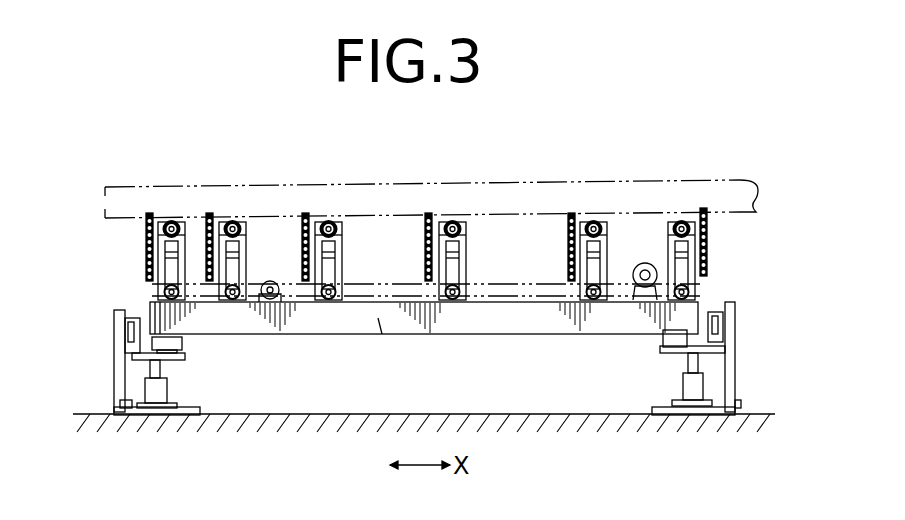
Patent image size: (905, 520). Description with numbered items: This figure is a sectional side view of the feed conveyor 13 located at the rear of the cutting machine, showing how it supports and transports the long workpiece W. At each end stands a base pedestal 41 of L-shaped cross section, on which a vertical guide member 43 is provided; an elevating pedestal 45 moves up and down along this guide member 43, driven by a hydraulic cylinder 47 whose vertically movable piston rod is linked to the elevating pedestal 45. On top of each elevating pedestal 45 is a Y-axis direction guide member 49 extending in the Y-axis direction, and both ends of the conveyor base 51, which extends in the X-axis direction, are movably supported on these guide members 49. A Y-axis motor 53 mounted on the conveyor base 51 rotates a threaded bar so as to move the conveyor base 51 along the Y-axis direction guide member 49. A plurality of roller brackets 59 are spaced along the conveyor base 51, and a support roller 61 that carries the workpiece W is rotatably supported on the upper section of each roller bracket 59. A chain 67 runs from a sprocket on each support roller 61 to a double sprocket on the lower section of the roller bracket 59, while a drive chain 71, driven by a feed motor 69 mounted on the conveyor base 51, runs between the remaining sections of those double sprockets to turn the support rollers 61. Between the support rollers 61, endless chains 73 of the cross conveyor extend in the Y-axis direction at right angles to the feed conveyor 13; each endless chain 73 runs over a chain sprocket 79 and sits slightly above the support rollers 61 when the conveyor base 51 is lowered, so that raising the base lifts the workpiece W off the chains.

The feed conveyor 13 is at (512, 178).
The workpiece W is at (740, 212).
The base pedestal 41 is at (114, 357).
The guide member 43 is at (132, 318).
The elevating pedestal 45 is at (183, 362).
The hydraulic cylinder 47 is at (135, 408).
The Y-axis direction guide member 49 is at (183, 345).
The conveyor base 51 is at (320, 334).
The Y-axis motor 53 is at (645, 263).
The roller bracket 59 is at (250, 240).
The support roller 61 is at (171, 229).
The chain 67 is at (352, 250).
The feed motor 69 is at (270, 281).
The drive chain 71 is at (382, 334).
The endless chain 73 is at (149, 213).
The chain sprocket 79 is at (146, 250).